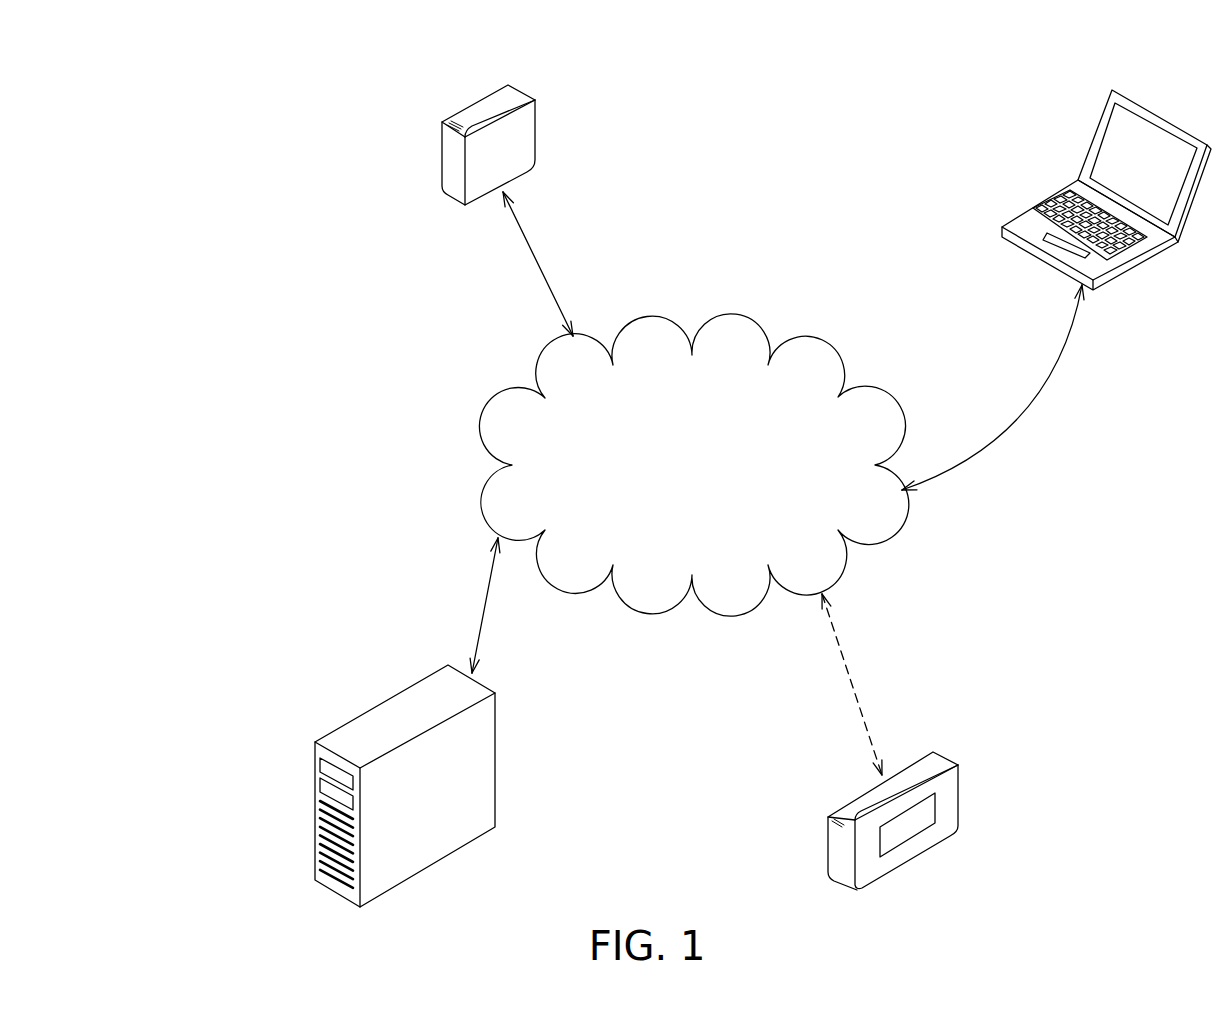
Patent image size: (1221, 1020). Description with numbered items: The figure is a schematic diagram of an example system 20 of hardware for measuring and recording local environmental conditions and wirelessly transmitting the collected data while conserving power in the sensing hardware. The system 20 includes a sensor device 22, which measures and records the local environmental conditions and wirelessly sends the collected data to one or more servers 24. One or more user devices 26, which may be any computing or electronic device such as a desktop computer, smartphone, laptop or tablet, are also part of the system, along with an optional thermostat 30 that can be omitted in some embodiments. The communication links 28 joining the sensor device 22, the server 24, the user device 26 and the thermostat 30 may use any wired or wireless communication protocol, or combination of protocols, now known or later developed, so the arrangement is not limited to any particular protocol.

The system 20 is at (345, 298).
The sensor device 22 is at (481, 95).
The server 24 is at (408, 802).
The user device 26 is at (1088, 156).
The communication network 28 is at (747, 316).
The thermostat 30 is at (960, 793).